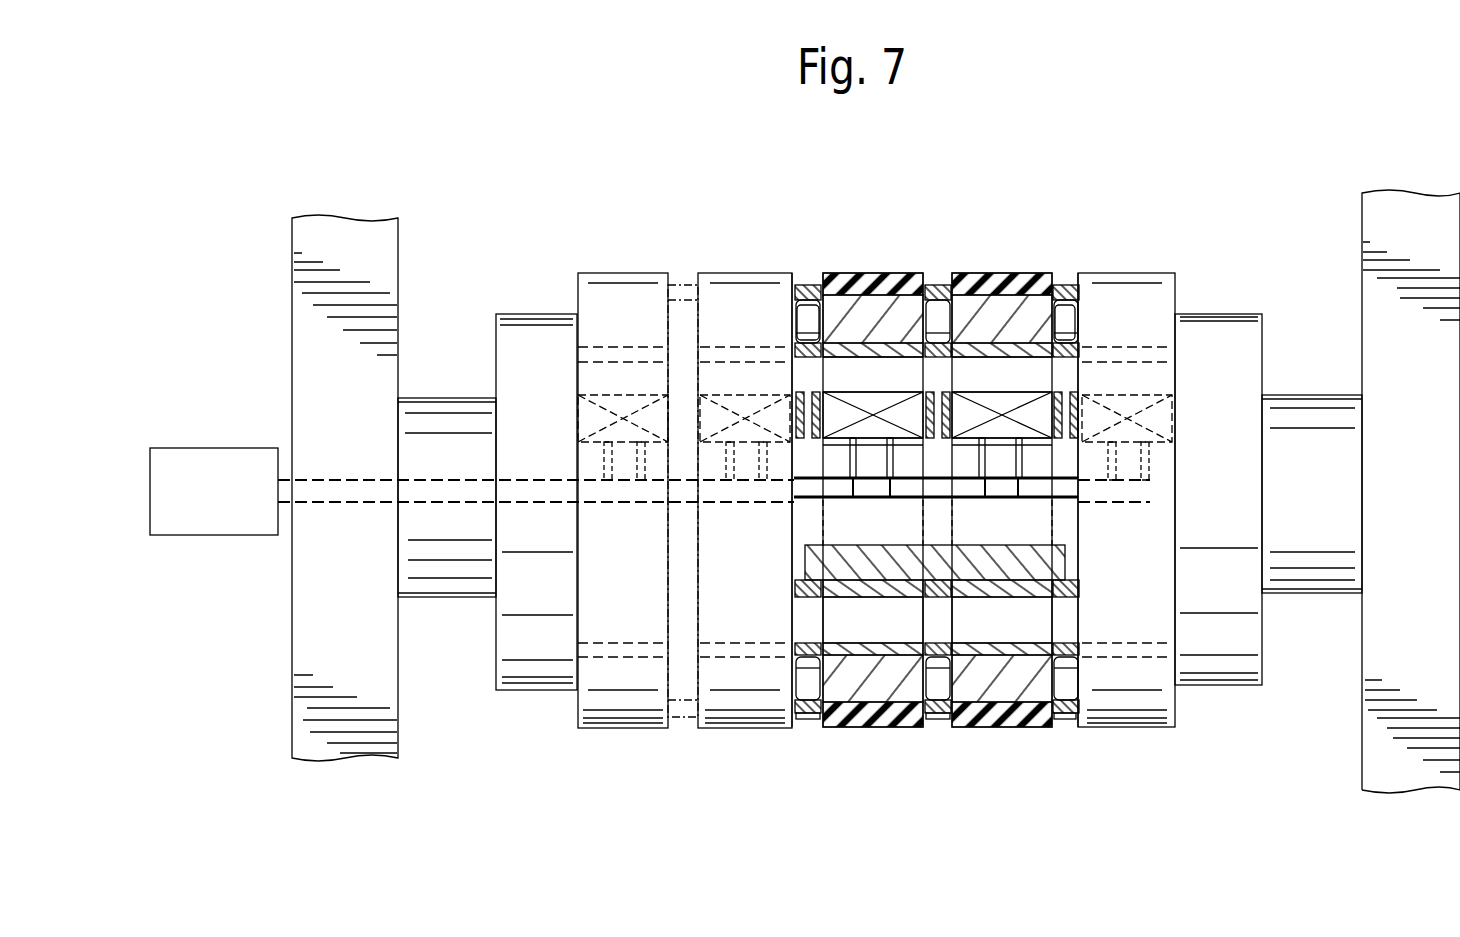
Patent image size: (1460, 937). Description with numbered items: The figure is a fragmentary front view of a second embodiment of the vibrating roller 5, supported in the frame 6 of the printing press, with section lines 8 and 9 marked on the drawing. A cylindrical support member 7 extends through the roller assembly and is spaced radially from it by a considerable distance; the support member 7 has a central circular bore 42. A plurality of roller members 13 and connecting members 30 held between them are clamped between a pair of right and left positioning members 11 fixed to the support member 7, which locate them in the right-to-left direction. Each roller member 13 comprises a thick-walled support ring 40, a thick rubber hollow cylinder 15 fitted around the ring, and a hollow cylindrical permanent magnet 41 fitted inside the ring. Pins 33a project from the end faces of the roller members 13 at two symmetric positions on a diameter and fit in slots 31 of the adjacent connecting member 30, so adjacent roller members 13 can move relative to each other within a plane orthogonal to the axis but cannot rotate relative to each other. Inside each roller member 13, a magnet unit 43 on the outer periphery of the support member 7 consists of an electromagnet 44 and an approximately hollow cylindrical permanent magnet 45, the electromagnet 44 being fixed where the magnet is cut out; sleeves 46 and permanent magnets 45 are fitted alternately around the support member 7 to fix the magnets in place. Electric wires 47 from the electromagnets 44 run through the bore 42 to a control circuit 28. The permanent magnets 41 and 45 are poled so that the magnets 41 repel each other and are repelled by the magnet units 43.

The vibrating roller 5 is at (929, 505).
The frame 6 is at (380, 737).
The support member 7 is at (1328, 404).
The section line 8 is at (950, 174).
The section line 9 is at (880, 162).
The positioning member 11 is at (500, 652).
The roller member 13 is at (588, 722).
The rubber hollow cylinder 15 is at (838, 720).
The control circuit 28 is at (226, 537).
The connecting member 30 is at (684, 718).
The slot 31 is at (802, 290).
The pin 33a is at (668, 325).
The support ring 40 is at (876, 305).
The permanent magnet 41 is at (853, 632).
The central circular bore 42 is at (1062, 558).
The magnet unit 43 is at (808, 338).
The electromagnet 44 is at (806, 420).
The permanent magnet 45 is at (838, 562).
The sleeve 46 is at (422, 597).
The electric wire 47 is at (285, 505).